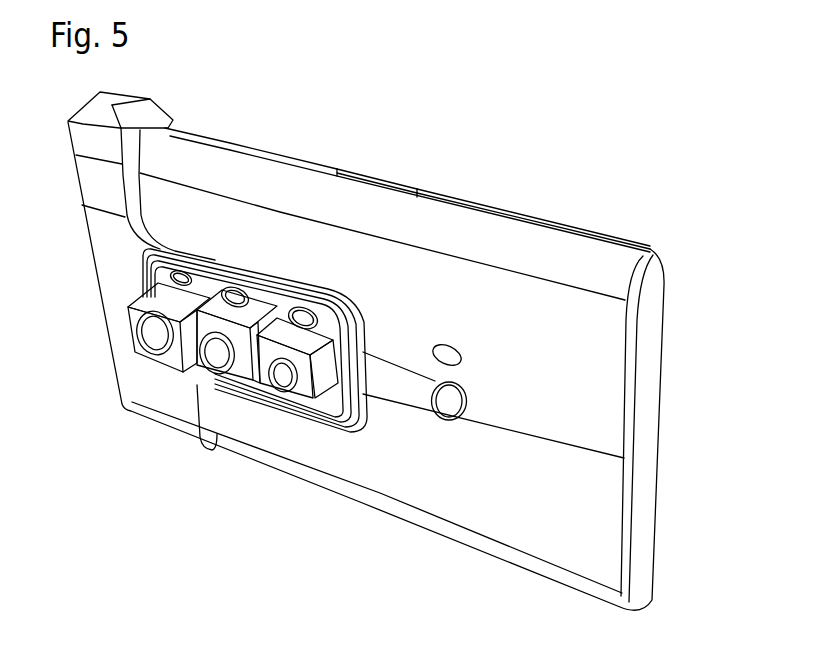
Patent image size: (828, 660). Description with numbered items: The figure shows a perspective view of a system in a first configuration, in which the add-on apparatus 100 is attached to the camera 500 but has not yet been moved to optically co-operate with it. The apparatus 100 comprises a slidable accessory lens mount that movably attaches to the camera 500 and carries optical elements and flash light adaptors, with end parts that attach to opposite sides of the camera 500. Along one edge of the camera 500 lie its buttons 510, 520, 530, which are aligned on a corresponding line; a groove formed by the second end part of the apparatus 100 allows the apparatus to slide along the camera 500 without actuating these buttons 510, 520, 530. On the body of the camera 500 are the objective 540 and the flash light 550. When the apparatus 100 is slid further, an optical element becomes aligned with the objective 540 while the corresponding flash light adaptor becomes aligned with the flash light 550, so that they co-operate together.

The apparatus 100 is at (157, 403).
The camera 500 is at (313, 450).
The button 510 is at (183, 133).
The button 520 is at (370, 184).
The button 530 is at (462, 205).
The objective 540 is at (447, 405).
The flash light 550 is at (452, 358).